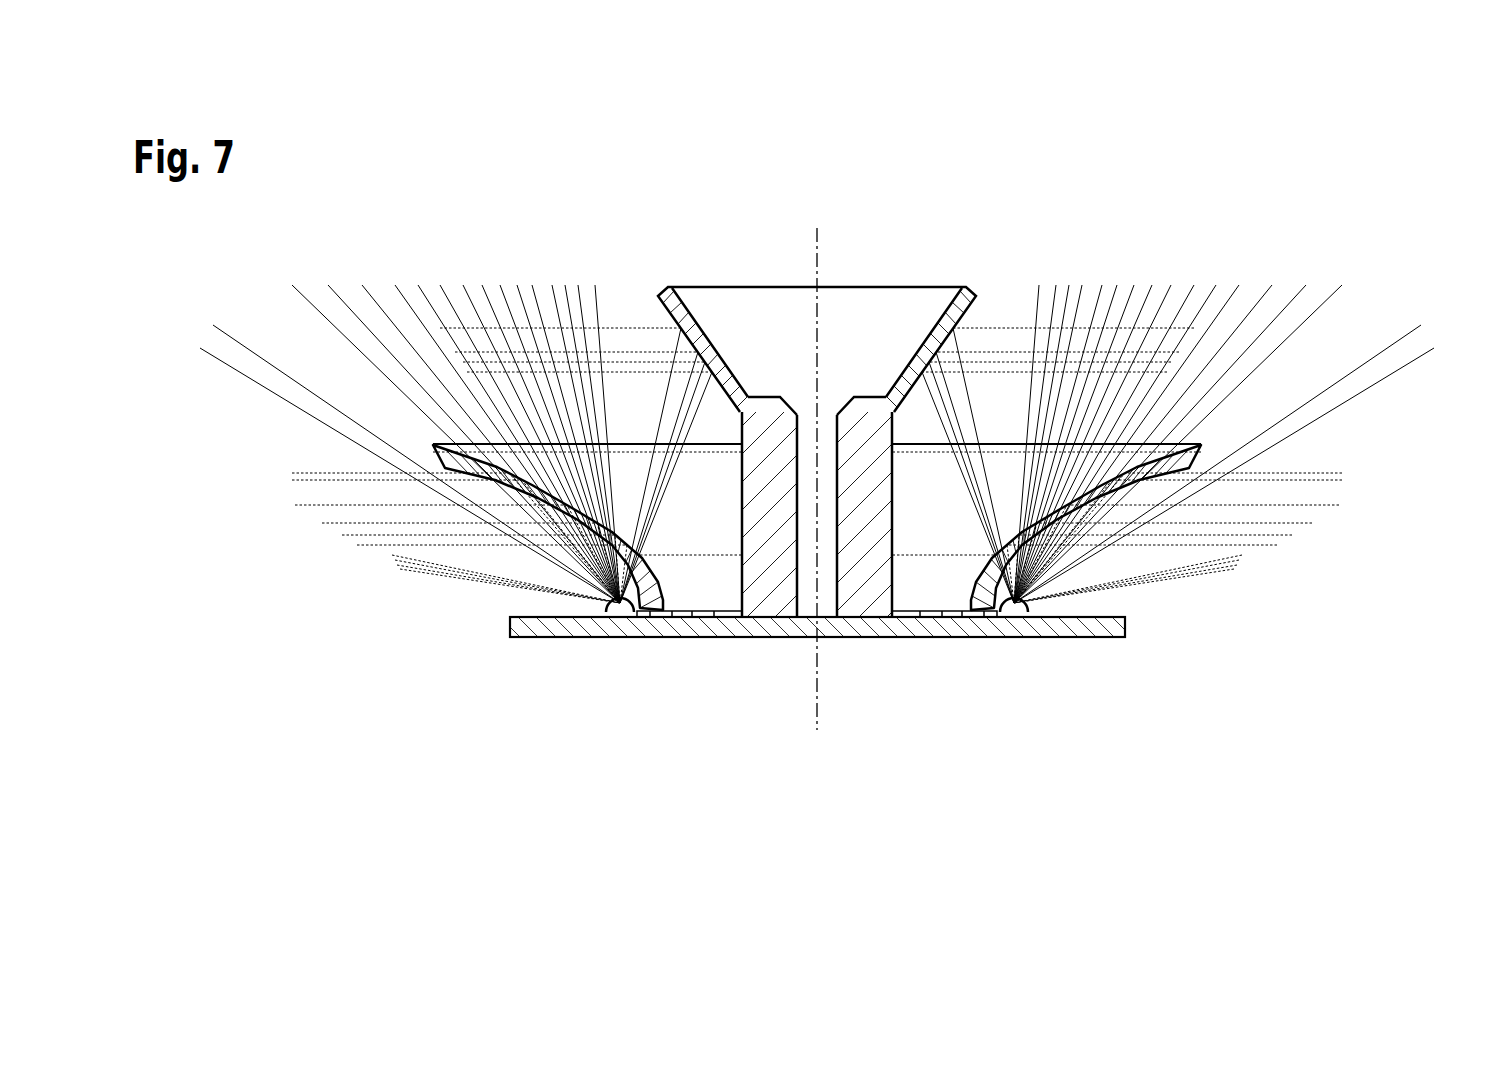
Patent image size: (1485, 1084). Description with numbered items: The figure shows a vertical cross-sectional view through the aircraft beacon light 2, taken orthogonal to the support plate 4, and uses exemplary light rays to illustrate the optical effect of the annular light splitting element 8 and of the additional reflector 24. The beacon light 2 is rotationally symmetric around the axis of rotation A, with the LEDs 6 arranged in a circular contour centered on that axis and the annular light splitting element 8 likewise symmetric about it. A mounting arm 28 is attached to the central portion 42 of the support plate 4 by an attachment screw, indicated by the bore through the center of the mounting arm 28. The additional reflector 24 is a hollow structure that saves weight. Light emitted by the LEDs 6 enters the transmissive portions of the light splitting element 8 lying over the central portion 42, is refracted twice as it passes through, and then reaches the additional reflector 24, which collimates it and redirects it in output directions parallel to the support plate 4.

The aircraft beacon light 2 is at (207, 458).
The support plate 4 is at (1135, 626).
The LEDs 6 is at (620, 615).
The annular light splitting element 8 is at (1229, 429).
The additional reflector 24 is at (988, 312).
The mounting arm 28 is at (893, 527).
The central portion of the support plate 42 is at (863, 662).
The axis of rotation A is at (818, 695).